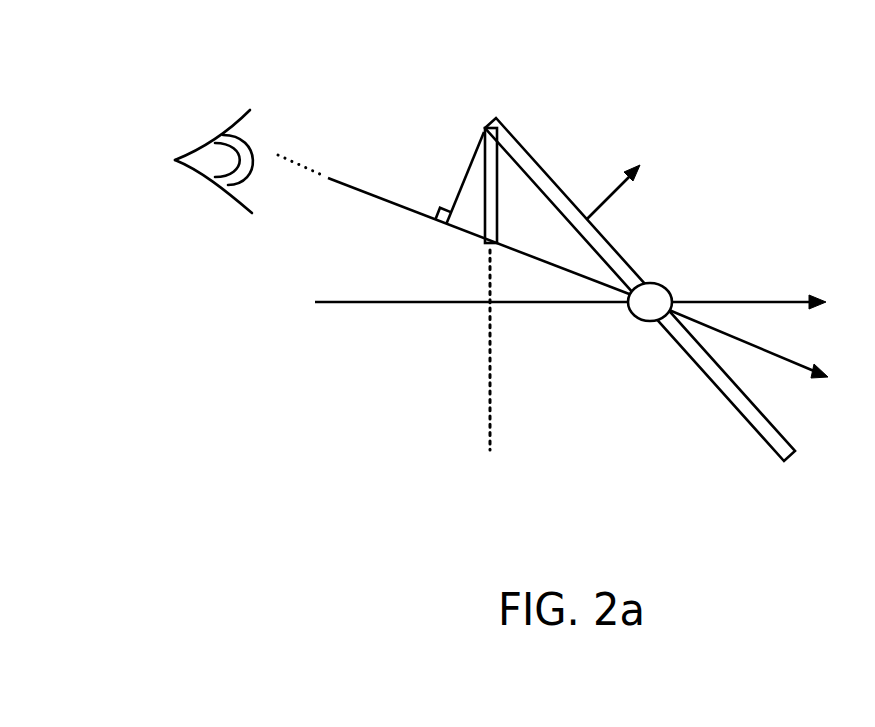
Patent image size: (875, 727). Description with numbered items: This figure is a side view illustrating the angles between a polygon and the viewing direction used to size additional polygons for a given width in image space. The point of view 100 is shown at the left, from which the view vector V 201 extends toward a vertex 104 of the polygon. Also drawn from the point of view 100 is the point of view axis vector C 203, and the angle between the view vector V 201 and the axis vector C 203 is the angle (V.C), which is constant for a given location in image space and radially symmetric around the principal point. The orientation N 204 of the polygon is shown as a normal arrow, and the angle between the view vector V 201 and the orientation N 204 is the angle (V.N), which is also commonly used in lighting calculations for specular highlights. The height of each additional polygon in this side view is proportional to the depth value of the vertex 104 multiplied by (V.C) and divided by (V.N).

The point of view 100 is at (213, 143).
The view vector V 201 is at (447, 224).
The orientation N 204 is at (604, 198).
The point of view axis vector C 203 is at (743, 300).
The vertex 104 is at (642, 324).